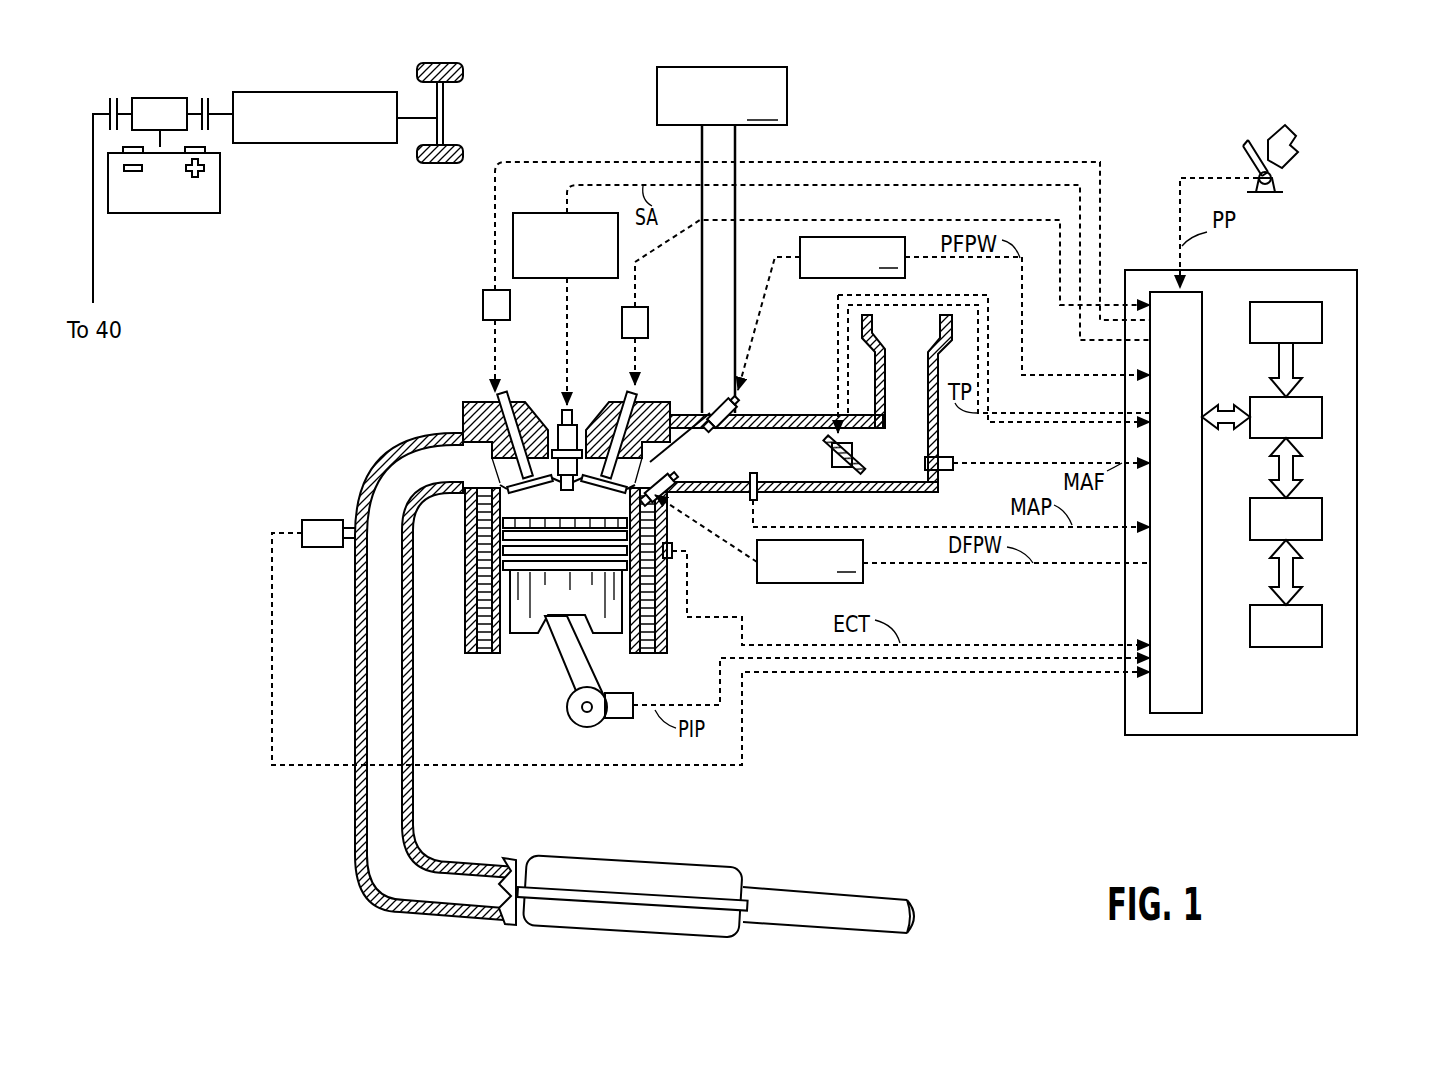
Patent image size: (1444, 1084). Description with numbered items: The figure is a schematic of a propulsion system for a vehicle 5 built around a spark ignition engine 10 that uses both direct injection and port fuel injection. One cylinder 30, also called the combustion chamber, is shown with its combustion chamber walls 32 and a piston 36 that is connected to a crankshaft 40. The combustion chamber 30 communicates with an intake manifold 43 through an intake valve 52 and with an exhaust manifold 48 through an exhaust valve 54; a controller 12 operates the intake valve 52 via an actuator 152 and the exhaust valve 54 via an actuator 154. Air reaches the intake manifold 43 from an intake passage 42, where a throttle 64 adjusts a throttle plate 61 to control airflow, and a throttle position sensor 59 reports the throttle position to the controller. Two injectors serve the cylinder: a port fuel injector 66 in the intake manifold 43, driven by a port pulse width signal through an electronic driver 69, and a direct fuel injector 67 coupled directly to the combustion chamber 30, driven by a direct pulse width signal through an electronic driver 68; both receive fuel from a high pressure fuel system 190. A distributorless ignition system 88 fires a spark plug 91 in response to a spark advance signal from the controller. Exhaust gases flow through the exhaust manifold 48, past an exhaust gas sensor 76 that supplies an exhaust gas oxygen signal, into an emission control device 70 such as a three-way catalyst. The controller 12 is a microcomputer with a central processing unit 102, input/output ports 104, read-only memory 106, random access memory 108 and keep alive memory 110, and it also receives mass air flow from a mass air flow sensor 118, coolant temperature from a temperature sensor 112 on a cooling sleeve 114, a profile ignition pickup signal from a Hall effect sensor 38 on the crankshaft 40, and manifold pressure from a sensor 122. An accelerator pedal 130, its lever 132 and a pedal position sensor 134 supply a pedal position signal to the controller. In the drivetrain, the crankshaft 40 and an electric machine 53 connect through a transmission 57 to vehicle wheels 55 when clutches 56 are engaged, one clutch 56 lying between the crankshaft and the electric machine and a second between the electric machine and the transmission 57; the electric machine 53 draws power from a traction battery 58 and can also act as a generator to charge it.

The vehicle 5 is at (1024, 112).
The engine 10 is at (394, 348).
The controller 12 is at (1357, 272).
The cylinder 30 is at (565, 497).
The combustion chamber walls 32 is at (507, 652).
The piston 36 is at (548, 602).
The Hall effect sensor 38 is at (613, 720).
The crankshaft 40 is at (580, 725).
The intake passage 42 is at (914, 376).
The intake manifold 43 is at (738, 461).
The exhaust manifold 48 is at (441, 474).
The intake valve 52 is at (585, 462).
The electric machine 53 is at (167, 97).
The exhaust valve 54 is at (518, 475).
The vehicle wheels 55 is at (444, 163).
The clutch 56 is at (109, 104).
The transmission 57 is at (334, 143).
The traction battery 58 is at (160, 214).
The throttle position sensor 59 is at (856, 440).
The throttle plate 61 is at (851, 468).
The throttle 64 is at (833, 463).
The port fuel injector 66 is at (722, 400).
The direct fuel injector 67 is at (668, 503).
The electronic driver 68 is at (902, 539).
The electronic driver 69 is at (821, 313).
The emission control device 70 is at (689, 859).
The exhaust gas sensor 76 is at (303, 523).
The distributorless ignition system 88 is at (532, 213).
The spark plug 91 is at (572, 408).
The central processing unit 102 is at (1322, 415).
The input/output ports 104 is at (1205, 300).
The read-only memory 106 is at (1322, 320).
The random access memory 108 is at (1322, 518).
The keep alive memory 110 is at (1322, 622).
The temperature sensor 112 is at (670, 562).
The cooling sleeve 114 is at (657, 620).
The mass air flow sensor 118 is at (951, 458).
The manifold pressure sensor 122 is at (752, 500).
The accelerator pedal 130 is at (1296, 142).
The foot / pedal lever 132 is at (1243, 152).
The accelerator pedal position sensor 134 is at (1280, 178).
The actuator 152 is at (622, 326).
The actuator 154 is at (483, 305).
The fuel system 190 is at (722, 240).